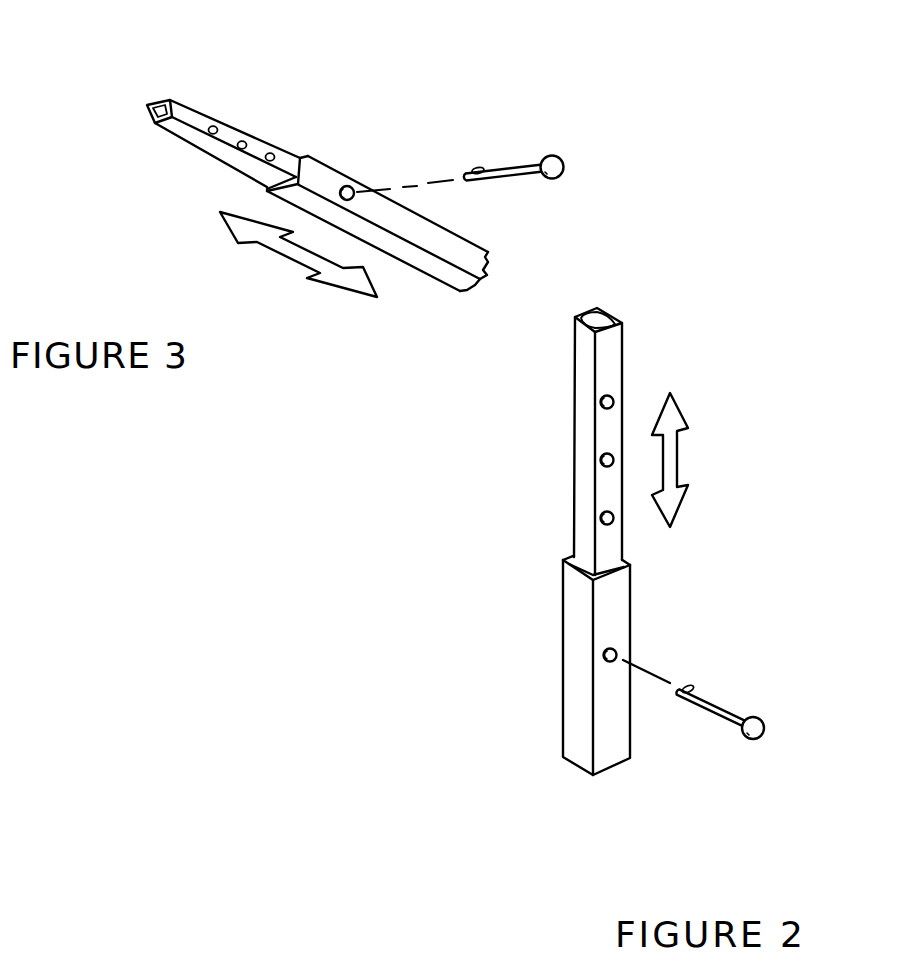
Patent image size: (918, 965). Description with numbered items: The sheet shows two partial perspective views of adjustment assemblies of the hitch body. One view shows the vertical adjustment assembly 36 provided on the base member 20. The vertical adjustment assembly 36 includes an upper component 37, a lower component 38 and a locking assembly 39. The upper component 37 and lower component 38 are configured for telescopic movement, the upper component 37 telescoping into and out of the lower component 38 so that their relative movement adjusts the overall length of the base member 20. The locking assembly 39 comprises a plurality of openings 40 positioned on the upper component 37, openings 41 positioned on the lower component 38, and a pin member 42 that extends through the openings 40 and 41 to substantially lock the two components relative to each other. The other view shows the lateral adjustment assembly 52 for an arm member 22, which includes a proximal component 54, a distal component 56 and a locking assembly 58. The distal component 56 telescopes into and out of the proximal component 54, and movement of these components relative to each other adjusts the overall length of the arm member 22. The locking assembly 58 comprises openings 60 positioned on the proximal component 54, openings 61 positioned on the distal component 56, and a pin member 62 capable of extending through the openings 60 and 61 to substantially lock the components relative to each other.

In FIG. 2, the base member 20 is at (560, 628).
In FIG. 3, the arm member 22 is at (313, 168).
In FIG. 2, the vertical adjustment assembly 36 is at (496, 543).
In FIG. 2, the upper component 37 is at (613, 355).
In FIG. 2, the lower component 38 is at (620, 606).
In FIG. 2, the locking assembly 39 is at (767, 706).
In FIG. 2, the openings 40 is at (600, 404).
In FIG. 2, the openings 41 is at (587, 659).
In FIG. 2, the pin member 42 is at (781, 735).
In FIG. 3, the lateral adjustment assembly 52 is at (286, 73).
In FIG. 3, the proximal component 54 is at (465, 238).
In FIG. 3, the distal component 56 is at (182, 117).
In FIG. 3, the locking assembly 58 is at (559, 106).
In FIG. 3, the openings 60 is at (358, 168).
In FIG. 3, the openings 61 is at (236, 150).
In FIG. 3, the pin member 62 is at (580, 155).